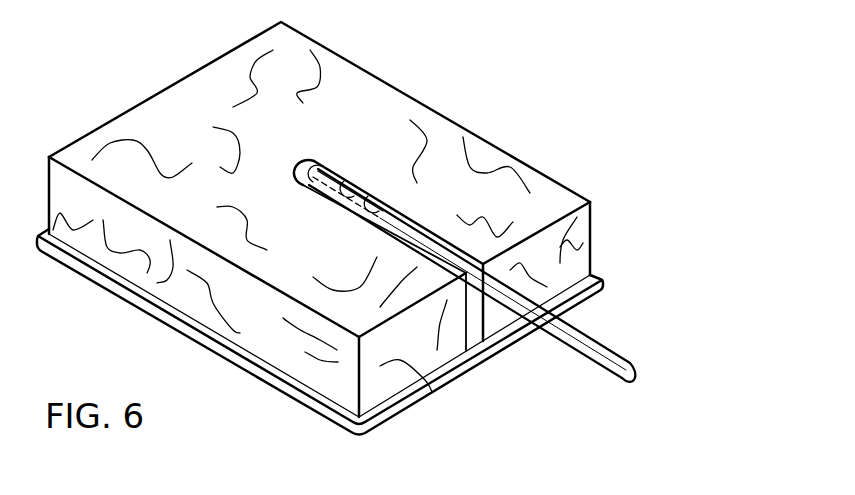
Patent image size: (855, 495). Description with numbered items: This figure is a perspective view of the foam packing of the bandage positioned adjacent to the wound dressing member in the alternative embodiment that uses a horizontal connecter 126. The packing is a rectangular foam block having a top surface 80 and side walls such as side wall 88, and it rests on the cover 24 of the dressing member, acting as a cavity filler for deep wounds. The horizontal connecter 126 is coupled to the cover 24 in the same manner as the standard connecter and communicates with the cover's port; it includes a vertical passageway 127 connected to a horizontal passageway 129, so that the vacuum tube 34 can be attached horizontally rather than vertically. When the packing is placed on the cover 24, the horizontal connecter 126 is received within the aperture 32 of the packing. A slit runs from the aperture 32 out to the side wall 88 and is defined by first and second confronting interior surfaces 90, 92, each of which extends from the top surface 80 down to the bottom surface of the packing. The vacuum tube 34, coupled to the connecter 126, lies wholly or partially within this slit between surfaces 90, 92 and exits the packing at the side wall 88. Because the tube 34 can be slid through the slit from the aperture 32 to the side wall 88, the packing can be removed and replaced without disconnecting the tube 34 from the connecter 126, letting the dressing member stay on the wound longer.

The cover 24 is at (142, 313).
The top surface 80 is at (172, 97).
The side wall 88 is at (210, 323).
The first confronting interior surface 90 is at (434, 238).
The aperture 32 is at (291, 156).
The vertical passageway 127 is at (316, 158).
The horizontal connecter 126 is at (347, 153).
The horizontal passageway 129 is at (352, 183).
The second confronting interior surface 92 is at (368, 216).
The vacuum tube 34 is at (583, 358).